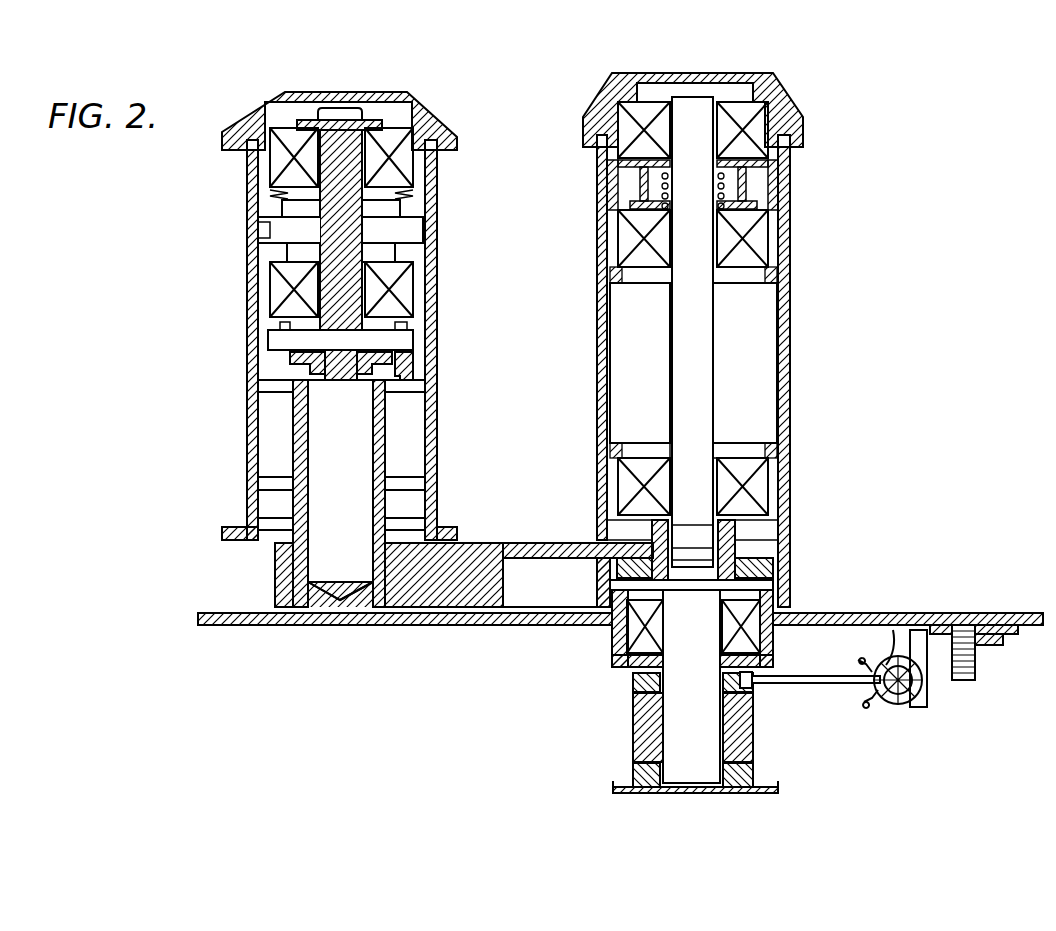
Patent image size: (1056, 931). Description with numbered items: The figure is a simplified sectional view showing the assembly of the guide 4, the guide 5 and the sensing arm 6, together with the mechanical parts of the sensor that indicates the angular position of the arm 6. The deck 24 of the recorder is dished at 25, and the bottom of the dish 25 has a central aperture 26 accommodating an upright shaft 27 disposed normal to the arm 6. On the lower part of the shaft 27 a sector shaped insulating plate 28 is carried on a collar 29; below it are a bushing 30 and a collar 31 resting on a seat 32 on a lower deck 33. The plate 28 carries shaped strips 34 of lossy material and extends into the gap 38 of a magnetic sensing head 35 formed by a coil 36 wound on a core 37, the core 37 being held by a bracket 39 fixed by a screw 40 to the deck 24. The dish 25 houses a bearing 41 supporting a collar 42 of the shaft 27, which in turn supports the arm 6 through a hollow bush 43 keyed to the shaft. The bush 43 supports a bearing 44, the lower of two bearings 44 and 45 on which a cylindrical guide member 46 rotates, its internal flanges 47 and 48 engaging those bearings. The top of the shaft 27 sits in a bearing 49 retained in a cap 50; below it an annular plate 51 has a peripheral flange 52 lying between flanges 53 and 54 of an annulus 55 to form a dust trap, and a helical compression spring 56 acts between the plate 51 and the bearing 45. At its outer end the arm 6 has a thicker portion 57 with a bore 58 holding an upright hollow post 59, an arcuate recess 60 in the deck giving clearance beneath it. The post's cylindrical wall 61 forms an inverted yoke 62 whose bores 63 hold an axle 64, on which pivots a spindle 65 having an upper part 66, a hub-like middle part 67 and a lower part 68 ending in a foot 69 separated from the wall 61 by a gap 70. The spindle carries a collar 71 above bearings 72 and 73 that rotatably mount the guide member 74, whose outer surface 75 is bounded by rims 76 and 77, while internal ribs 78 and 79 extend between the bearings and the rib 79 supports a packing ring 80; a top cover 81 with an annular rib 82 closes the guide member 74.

The guide 4 is at (594, 346).
The guide 5 is at (236, 404).
The arm 6 is at (530, 543).
The deck 24 is at (212, 626).
The dish 25 is at (616, 651).
The central aperture 26 is at (641, 684).
The upright shaft 27 is at (666, 711).
The sector shaped insulating plate 28 is at (790, 676).
The collar 29 is at (751, 687).
The bushing 30 is at (633, 741).
The collar 31 is at (754, 771).
The seat 32 is at (756, 781).
The lower deck 33 is at (613, 790).
The shaped strips 34 is at (871, 671).
The magnetic sensing head 35 is at (898, 708).
The coil 36 is at (927, 691).
The core 37 is at (869, 699).
The gap 38 is at (895, 658).
The bracket 39 is at (954, 625).
The screw 40 is at (977, 681).
The bearing 41 is at (630, 621).
The collar 42 is at (606, 586).
The hollow bush 43 is at (736, 531).
The bearing 44 is at (766, 476).
The bearing 45 is at (766, 254).
The cylindrical guide member 46 is at (596, 421).
The internal flange 47 is at (625, 450).
The internal flange 48 is at (612, 286).
The bearing 49 is at (766, 121).
The cap 50 is at (711, 73).
The annular plate 51 is at (731, 161).
The peripheral flange 52 is at (771, 176).
The flange 53 is at (761, 186).
The flange 54 is at (759, 206).
The annulus 55 is at (621, 206).
The helical compression spring 56 is at (668, 196).
The portion of greater thickness 57 is at (460, 600).
The bore 58 is at (296, 523).
The upright hollow post 59 is at (381, 511).
The arcuate recess 60 is at (390, 609).
The cylindrical wall 61 is at (380, 451).
The inverted yoke 62 is at (405, 371).
The bores 63 is at (405, 323).
The axle 64 is at (276, 341).
The spindle 65 is at (310, 276).
The upper part 66 is at (336, 183).
The middle part 67 is at (405, 399).
The lower part 68 is at (346, 411).
The foot 69 is at (340, 455).
The gap 70 is at (312, 490).
The collar 71 is at (302, 118).
The bearing 72 is at (405, 168).
The bearing 73 is at (405, 286).
The guide member 74 is at (425, 226).
The cylindrical outer surface 75 is at (437, 246).
The rim 76 is at (440, 152).
The rim 77 is at (447, 536).
The internal rib 78 is at (262, 241).
The internal rib 79 is at (272, 229).
The packing ring 80 is at (400, 193).
The top cover 81 is at (322, 92).
The annular rib 82 is at (418, 108).